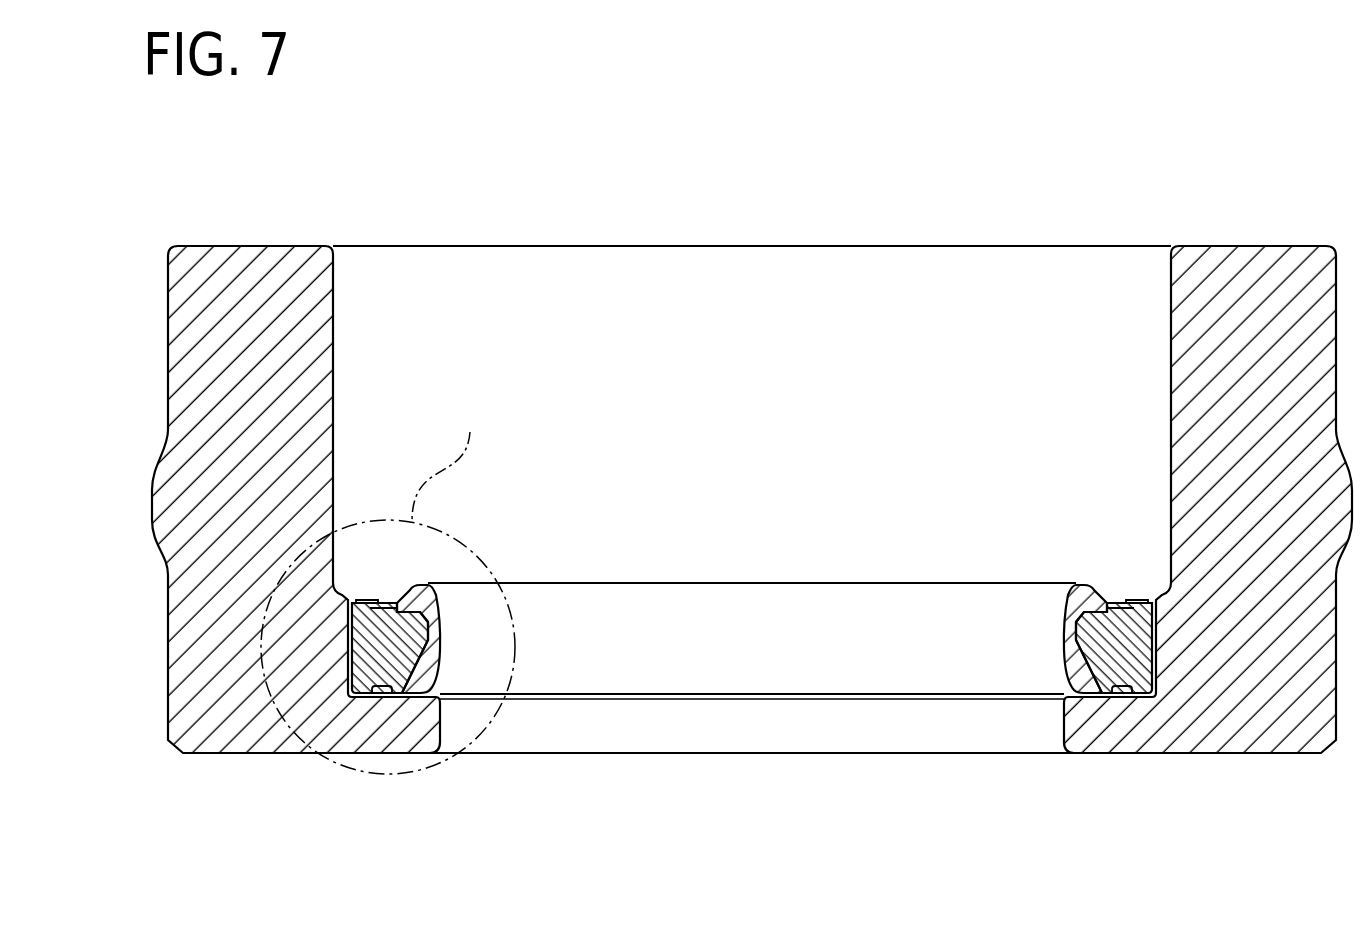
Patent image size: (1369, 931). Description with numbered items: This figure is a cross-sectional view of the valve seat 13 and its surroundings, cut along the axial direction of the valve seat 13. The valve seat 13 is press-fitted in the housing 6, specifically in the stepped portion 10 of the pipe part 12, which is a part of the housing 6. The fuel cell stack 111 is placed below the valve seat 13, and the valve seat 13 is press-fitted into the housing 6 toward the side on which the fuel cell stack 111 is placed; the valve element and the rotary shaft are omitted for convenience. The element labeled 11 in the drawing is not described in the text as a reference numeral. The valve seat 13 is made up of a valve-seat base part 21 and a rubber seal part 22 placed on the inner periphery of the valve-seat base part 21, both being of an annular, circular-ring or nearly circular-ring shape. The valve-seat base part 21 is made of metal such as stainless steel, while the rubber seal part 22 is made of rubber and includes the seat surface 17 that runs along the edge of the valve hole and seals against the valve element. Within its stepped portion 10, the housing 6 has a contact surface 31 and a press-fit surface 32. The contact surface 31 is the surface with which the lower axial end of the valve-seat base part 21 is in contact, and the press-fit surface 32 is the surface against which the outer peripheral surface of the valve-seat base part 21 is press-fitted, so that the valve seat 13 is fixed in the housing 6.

The housing 6 is at (701, 502).
The stepped portion 10 is at (601, 704).
The fuel cell stack 11 is at (762, 341).
The pipe part 12 is at (1242, 268).
The valve seat 13 is at (378, 594).
The seat surface 17 is at (434, 588).
The valve-seat base part 21 is at (372, 655).
The rubber seal part 22 is at (424, 675).
The contact surface 31 is at (383, 690).
The press-fit surface 32 is at (372, 605).
The fuel cell stack 111 is at (732, 799).